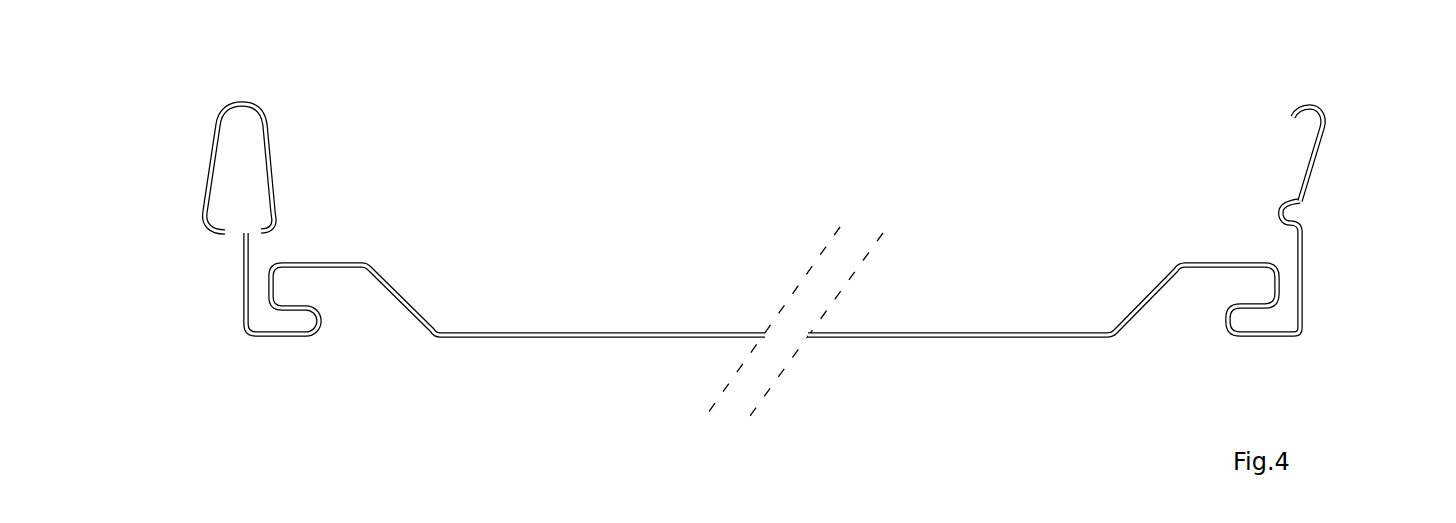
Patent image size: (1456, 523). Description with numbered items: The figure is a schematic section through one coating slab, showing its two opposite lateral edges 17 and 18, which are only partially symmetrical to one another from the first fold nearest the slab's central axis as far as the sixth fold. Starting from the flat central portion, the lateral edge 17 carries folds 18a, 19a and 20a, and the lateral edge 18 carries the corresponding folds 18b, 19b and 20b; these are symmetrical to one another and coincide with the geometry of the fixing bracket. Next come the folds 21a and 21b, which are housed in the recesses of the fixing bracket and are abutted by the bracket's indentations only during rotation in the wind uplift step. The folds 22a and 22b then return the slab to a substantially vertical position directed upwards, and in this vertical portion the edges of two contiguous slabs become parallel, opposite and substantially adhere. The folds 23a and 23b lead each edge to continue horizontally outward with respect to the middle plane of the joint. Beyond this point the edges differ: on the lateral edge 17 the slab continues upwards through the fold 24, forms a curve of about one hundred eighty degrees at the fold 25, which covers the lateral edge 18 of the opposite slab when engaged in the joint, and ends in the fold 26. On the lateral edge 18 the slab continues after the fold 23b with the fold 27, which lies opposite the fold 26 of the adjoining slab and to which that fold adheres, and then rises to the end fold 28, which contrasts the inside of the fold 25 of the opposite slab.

The lateral edge 17 is at (348, 115).
The lateral edge 18 is at (1104, 160).
The fold 18a is at (436, 338).
The fold 18b is at (1106, 338).
The fold 19a is at (367, 262).
The fold 19b is at (1178, 263).
The fold 20a is at (284, 287).
The fold 20b is at (1274, 263).
The fold 21a is at (322, 322).
The fold 21b is at (1227, 331).
The fold 22a is at (247, 337).
The fold 22b is at (1299, 340).
The fold 23a is at (240, 235).
The fold 23b is at (1304, 228).
The fold 24 is at (278, 227).
The fold 25 is at (240, 101).
The fold 26 is at (201, 228).
The fold 27 is at (1280, 212).
The end fold 28 is at (1307, 104).